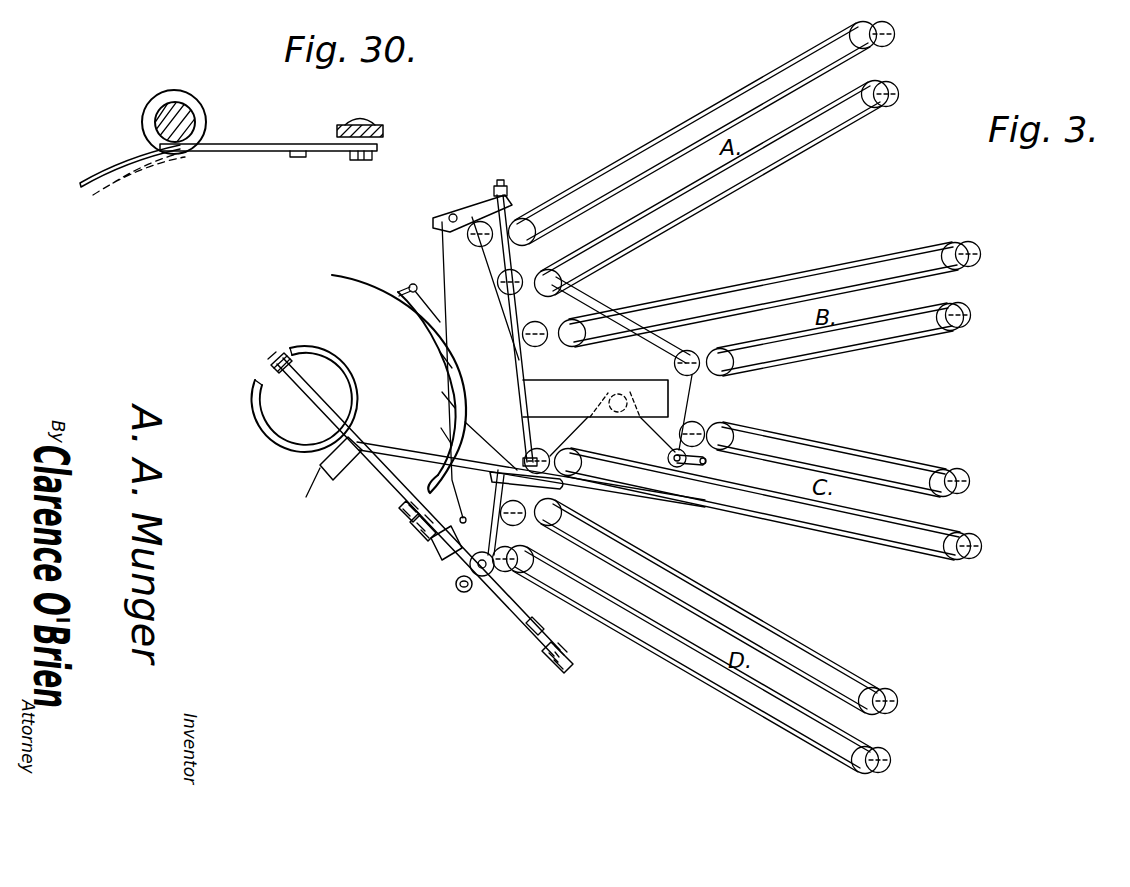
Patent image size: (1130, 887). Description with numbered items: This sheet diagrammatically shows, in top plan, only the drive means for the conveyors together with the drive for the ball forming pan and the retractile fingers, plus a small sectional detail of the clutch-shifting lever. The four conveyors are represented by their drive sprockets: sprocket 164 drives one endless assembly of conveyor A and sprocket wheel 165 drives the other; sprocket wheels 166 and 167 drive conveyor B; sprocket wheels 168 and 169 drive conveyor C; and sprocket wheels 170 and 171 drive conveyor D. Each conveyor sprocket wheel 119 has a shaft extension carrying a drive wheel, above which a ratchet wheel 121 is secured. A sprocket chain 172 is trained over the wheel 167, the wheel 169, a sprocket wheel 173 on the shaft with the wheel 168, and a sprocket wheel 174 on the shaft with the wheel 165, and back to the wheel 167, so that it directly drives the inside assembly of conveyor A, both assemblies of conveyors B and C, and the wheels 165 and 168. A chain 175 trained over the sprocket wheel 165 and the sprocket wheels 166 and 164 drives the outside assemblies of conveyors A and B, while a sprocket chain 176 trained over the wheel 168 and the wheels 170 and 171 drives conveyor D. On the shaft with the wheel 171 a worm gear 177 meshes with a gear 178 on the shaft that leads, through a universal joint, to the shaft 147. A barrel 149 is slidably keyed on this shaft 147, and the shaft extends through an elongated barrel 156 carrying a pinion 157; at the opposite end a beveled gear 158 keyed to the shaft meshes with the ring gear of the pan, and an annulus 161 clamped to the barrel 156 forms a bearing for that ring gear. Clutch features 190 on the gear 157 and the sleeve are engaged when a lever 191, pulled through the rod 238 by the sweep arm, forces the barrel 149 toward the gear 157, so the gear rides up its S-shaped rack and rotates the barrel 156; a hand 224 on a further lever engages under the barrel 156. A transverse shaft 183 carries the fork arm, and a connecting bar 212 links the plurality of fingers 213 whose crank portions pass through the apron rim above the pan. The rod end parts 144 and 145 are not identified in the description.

In FIG. 3, the sprocket wheel 119 is at (861, 47).
In FIG. 3, the ratchet wheel 121 is at (895, 32).
In FIG. 3, the rod end 144 is at (549, 666).
In FIG. 3, the rod end cap 145 is at (567, 663).
In FIG. 30, the shaft 147 is at (186, 118).
In FIG. 3, the shaft 147 is at (502, 603).
In FIG. 30, the barrel 149 is at (177, 98).
In FIG. 3, the barrel 149 is at (433, 550).
In FIG. 3, the elongated barrel 156 is at (314, 406).
In FIG. 3, the pinion 157 is at (400, 516).
In FIG. 3, the beveled gear 158 is at (280, 356).
In FIG. 3, the annulus 161 is at (283, 448).
In FIG. 3, the sprocket 164 is at (465, 215).
In FIG. 3, the sprocket wheel 165 is at (523, 275).
In FIG. 3, the sprocket wheel 166 is at (535, 347).
In FIG. 3, the sprocket wheel 167 is at (675, 363).
In FIG. 3, the sprocket wheel 168 is at (533, 451).
In FIG. 3, the sprocket wheel 169 is at (701, 420).
In FIG. 3, the sprocket wheel 170 is at (509, 521).
In FIG. 3, the sprocket wheel 171 is at (498, 520).
In FIG. 3, the sprocket chain 172 is at (600, 300).
In FIG. 3, the sprocket wheel 173 is at (508, 440).
In FIG. 3, the sprocket wheel 174 is at (500, 283).
In FIG. 3, the chain 175 is at (447, 250).
In FIG. 3, the sprocket chain 176 is at (500, 486).
In FIG. 3, the worm gear 177 is at (470, 574).
In FIG. 3, the gear 178 is at (461, 592).
In FIG. 3, the shaft 183 is at (530, 389).
In FIG. 3, the clutch 190 is at (418, 530).
In FIG. 30, the lever 191 is at (236, 140).
In FIG. 3, the lever 191 is at (470, 560).
In FIG. 3, the connecting bar 212 is at (464, 403).
In FIG. 3, the fingers 213 is at (398, 312).
In FIG. 3, the hand 224 is at (317, 485).
In FIG. 30, the rod 238 is at (293, 158).
In FIG. 3, the rod 238 is at (446, 306).